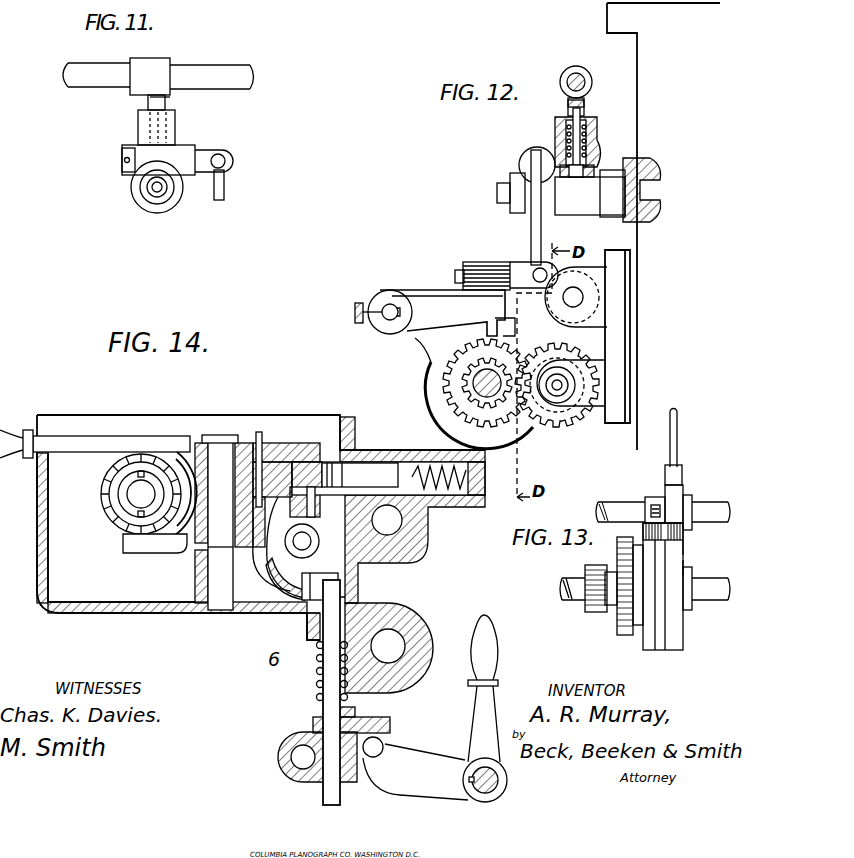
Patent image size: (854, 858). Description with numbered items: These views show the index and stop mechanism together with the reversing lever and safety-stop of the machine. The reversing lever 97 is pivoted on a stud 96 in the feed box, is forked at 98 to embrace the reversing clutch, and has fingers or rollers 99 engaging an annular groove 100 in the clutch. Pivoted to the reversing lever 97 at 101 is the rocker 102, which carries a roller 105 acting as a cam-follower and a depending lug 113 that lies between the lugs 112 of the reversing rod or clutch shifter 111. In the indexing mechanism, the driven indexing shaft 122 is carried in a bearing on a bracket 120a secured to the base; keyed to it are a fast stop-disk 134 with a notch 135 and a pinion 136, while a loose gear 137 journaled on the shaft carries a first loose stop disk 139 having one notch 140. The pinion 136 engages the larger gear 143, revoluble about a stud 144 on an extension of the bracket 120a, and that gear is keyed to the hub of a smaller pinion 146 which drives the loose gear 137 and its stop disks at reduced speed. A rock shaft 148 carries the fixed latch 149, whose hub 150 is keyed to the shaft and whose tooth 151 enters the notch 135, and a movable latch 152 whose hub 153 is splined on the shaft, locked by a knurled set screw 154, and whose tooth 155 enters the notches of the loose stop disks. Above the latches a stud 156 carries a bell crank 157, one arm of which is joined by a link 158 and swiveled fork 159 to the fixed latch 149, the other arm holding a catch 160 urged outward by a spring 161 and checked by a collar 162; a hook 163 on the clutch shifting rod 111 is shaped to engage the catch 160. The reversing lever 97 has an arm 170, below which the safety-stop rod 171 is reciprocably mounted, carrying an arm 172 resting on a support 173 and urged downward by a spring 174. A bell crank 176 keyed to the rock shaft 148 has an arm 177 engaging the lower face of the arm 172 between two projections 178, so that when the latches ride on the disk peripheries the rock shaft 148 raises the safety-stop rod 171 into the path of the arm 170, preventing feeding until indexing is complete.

In FIG. 14, the stud 96 is at (221, 452).
In FIG. 14, the reversing lever 97 is at (72, 436).
In FIG. 14, the fork 98 is at (183, 545).
In FIG. 14, the fingers or rollers 99 is at (143, 531).
In FIG. 14, the annular groove 100 is at (105, 498).
In FIG. 14, the pivot 101 is at (259, 432).
In FIG. 14, the rocker 102 is at (284, 458).
In FIG. 14, the roller 105 is at (346, 462).
In FIG. 11, the reversing rod or clutch shifter 111 is at (100, 78).
In FIG. 12, the reversing rod or clutch shifter 111 is at (573, 72).
In FIG. 14, the reversing rod or clutch shifter 111 is at (305, 545).
In FIG. 14, the lugs 112 is at (408, 560).
In FIG. 14, the lug 113 is at (404, 520).
In FIG. 12, the bracket 120a is at (428, 350).
In FIG. 12, the driven indexing shaft 122 is at (477, 400).
In FIG. 13, the fast stop-disk 134 is at (684, 552).
In FIG. 13, the notch 135 is at (680, 548).
In FIG. 12, the pinion 136 is at (466, 392).
In FIG. 13, the pinion 136 is at (592, 609).
In FIG. 12, the loose gear 137 is at (445, 378).
In FIG. 13, the loose gear 137 is at (620, 637).
In FIG. 13, the first loose stop disk 139 is at (660, 650).
In FIG. 13, the notch 140 is at (690, 565).
In FIG. 12, the gear 143 is at (577, 422).
In FIG. 12, the stud 144 is at (578, 390).
In FIG. 12, the pinion 146 is at (585, 378).
In FIG. 13, the rock shaft 148 is at (603, 506).
In FIG. 14, the rock shaft 148 is at (497, 782).
In FIG. 12, the fixed latch 149 is at (368, 11).
In FIG. 13, the fixed latch 149 is at (676, 493).
In FIG. 12, the hub 150 is at (423, 10).
In FIG. 13, the tooth 151 is at (684, 500).
In FIG. 12, the movable latch 152 is at (420, 290).
In FIG. 12, the hub 153 is at (383, 326).
In FIG. 12, the set screw 154 is at (357, 302).
In FIG. 12, the tooth 155 is at (508, 322).
In FIG. 13, the tooth 155 is at (652, 514).
In FIG. 11, the stud 156 is at (157, 187).
In FIG. 12, the stud 156 is at (648, 190).
In FIG. 11, the bell crank 157 is at (178, 150).
In FIG. 12, the bell crank 157 is at (607, 168).
In FIG. 11, the link 158 is at (226, 182).
In FIG. 12, the link 158 is at (531, 232).
In FIG. 13, the link 158 is at (678, 432).
In FIG. 11, the swiveled fork 159 is at (200, 153).
In FIG. 12, the swiveled fork 159 is at (522, 262).
In FIG. 11, the catch 160 is at (158, 93).
In FIG. 12, the catch 160 is at (584, 116).
In FIG. 12, the spring 161 is at (555, 134).
In FIG. 12, the collar 162 is at (590, 177).
In FIG. 11, the hook 163 is at (170, 98).
In FIG. 12, the hook 163 is at (568, 104).
In FIG. 14, the arm 170 is at (310, 615).
In FIG. 14, the safety-stop rod 171 is at (328, 795).
In FIG. 14, the arm 172 is at (355, 716).
In FIG. 14, the support 173 is at (282, 752).
In FIG. 14, the spring 174 is at (316, 670).
In FIG. 14, the bell crank 176 is at (478, 766).
In FIG. 14, the arm 177 is at (410, 776).
In FIG. 14, the projections 178 is at (385, 741).